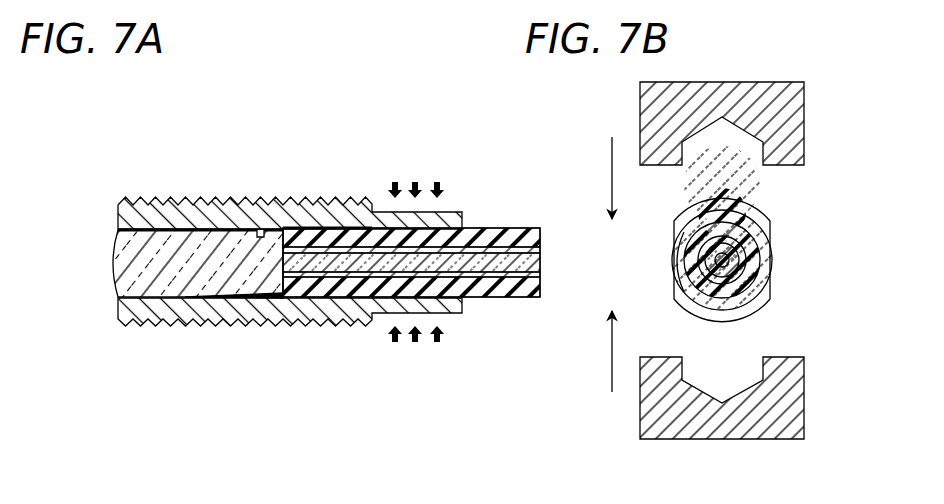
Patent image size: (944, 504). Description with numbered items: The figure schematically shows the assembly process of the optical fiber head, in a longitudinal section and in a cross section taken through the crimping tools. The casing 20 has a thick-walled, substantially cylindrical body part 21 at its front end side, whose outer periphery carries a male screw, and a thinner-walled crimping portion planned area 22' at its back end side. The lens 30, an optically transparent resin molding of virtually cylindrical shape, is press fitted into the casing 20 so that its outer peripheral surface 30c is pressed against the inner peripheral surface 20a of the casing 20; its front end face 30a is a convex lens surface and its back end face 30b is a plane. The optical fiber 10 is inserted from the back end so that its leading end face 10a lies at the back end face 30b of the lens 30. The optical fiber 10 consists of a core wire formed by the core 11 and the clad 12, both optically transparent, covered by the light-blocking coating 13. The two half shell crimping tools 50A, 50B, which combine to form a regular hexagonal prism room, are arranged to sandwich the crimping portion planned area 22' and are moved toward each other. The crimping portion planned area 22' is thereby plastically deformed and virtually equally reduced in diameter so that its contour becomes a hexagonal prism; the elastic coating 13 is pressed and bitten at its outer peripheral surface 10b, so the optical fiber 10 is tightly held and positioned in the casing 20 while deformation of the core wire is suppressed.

In FIG. 7A, the optical fiber 10 is at (420, 262).
In FIG. 7B, the optical fiber 10 is at (753, 248).
In FIG. 7A, the leading end face 10a is at (272, 300).
In FIG. 7A, the outer peripheral surface of the coating 10b is at (349, 300).
In FIG. 7B, the outer peripheral surface of the coating 10b is at (745, 310).
In FIG. 7A, the core 11 is at (472, 266).
In FIG. 7B, the core 11 is at (735, 259).
In FIG. 7A, the clad 12 is at (494, 275).
In FIG. 7B, the clad 12 is at (741, 263).
In FIG. 7A, the coating 13 is at (521, 290).
In FIG. 7B, the coating 13 is at (760, 281).
In FIG. 7A, the casing 20 is at (145, 195).
In FIG. 7B, the casing 20 is at (683, 206).
In FIG. 7A, the inner peripheral surface of the casing 20a is at (140, 298).
In FIG. 7B, the inner peripheral surface of the casing 20a is at (700, 256).
In FIG. 7A, the body part 21 is at (344, 214).
In FIG. 7B, the body part 21 is at (688, 308).
In FIG. 7A, the crimping portion planned area 22' is at (427, 234).
In FIG. 7A, the lens 30 is at (104, 241).
In FIG. 7A, the front end face 30a is at (112, 271).
In FIG. 7A, the back end face 30b is at (286, 290).
In FIG. 7A, the outer peripheral surface 30c is at (192, 298).
In FIG. 7B, the crimping tool 50A is at (765, 97).
In FIG. 7B, the crimping tool 50B is at (770, 423).